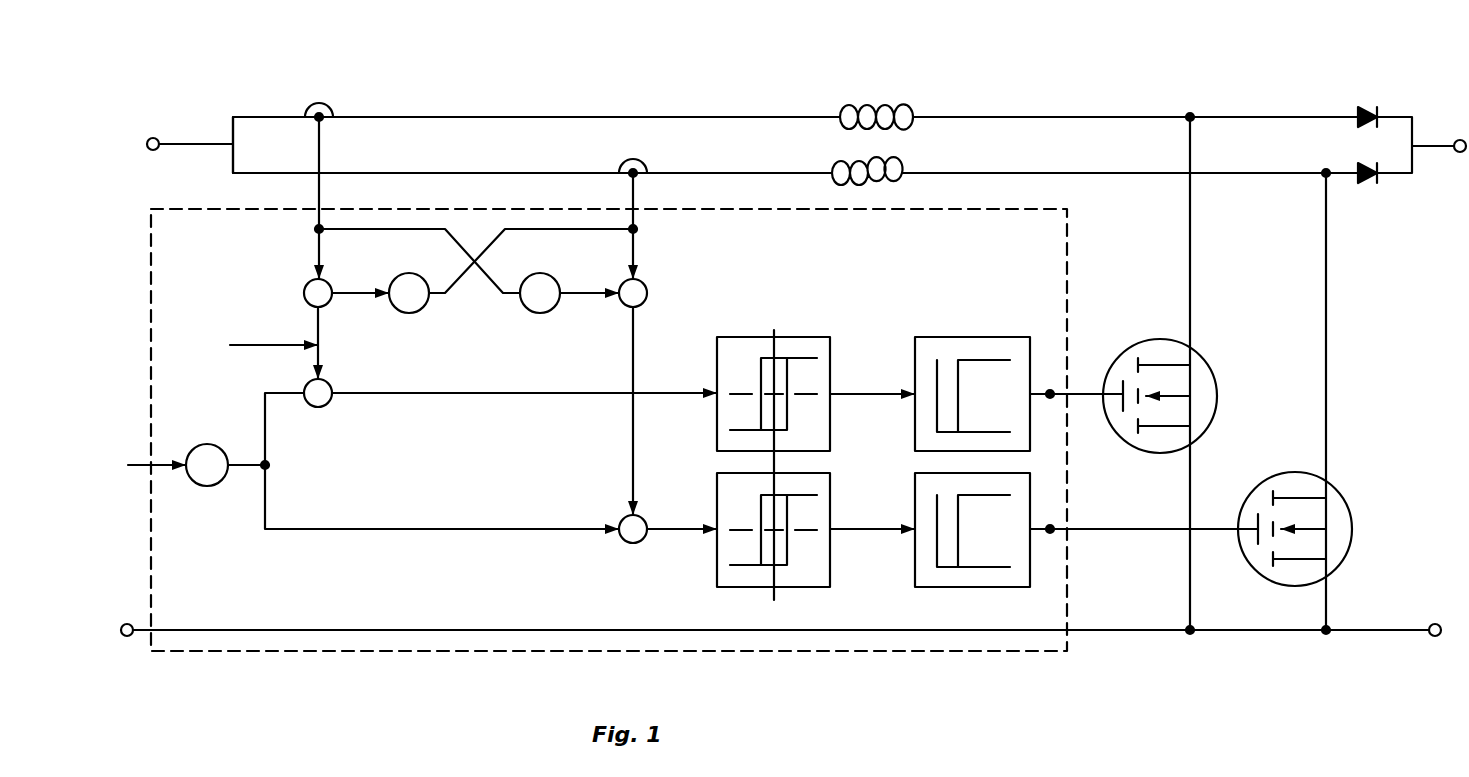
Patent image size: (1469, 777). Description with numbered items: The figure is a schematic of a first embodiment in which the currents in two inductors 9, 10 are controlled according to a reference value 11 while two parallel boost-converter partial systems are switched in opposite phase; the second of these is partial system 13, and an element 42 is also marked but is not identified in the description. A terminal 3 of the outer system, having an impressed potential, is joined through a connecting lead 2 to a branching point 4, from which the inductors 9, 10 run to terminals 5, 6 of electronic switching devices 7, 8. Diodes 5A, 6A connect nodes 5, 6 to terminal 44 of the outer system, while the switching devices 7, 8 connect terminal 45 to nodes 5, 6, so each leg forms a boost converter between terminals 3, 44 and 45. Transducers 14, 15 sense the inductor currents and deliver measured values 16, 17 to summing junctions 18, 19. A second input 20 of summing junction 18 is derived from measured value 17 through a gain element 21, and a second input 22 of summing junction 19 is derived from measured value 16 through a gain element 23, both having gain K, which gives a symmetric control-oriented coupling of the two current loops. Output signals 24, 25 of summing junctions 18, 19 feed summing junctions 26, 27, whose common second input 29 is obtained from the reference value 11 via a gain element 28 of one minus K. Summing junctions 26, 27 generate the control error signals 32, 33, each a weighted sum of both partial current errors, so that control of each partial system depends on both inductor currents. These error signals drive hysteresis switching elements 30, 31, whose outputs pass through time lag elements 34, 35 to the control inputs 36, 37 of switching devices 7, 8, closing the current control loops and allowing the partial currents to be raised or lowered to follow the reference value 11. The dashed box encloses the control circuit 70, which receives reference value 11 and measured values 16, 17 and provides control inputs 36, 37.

The connecting lead 2 is at (207, 141).
The terminal 3 is at (162, 147).
The branching point 4 is at (236, 140).
The input line section 42 is at (236, 108).
The partial system 13 is at (271, 180).
The transducer 14 is at (334, 105).
The measured value 16 is at (321, 197).
The transducer 15 is at (638, 165).
The measured value 17 is at (640, 197).
The inductor 9 is at (845, 108).
The inductor 10 is at (893, 165).
The terminal 5 is at (1190, 115).
The terminal 6 is at (1326, 172).
The diode 5A is at (1363, 108).
The diode 6A is at (1370, 184).
The terminal 44 is at (1460, 139).
The terminal 45 is at (1432, 624).
The electronic switching device 7 is at (1153, 320).
The electronic switching device 8 is at (1278, 449).
The summing junction 18 is at (304, 303).
The summing junction 19 is at (647, 295).
The second input 20 is at (353, 294).
The gain element 21 is at (419, 313).
The second input 22 is at (588, 298).
The gain element 23 is at (527, 308).
The output signal 24 is at (258, 345).
The output signal 25 is at (633, 380).
The summing junction 26 is at (325, 399).
The summing junction 27 is at (621, 538).
The gain element 28 is at (215, 486).
The second input 29 is at (270, 466).
The reference value 11 is at (160, 459).
The hysteresis switching element 30 is at (800, 339).
The hysteresis switching element 31 is at (738, 588).
The control error signal 32 is at (657, 399).
The control error signal 33 is at (660, 534).
The time lag element 34 is at (943, 343).
The time lag element 35 is at (914, 586).
The control input 36 is at (1033, 392).
The control input 37 is at (1050, 536).
The control circuit 70 is at (970, 651).